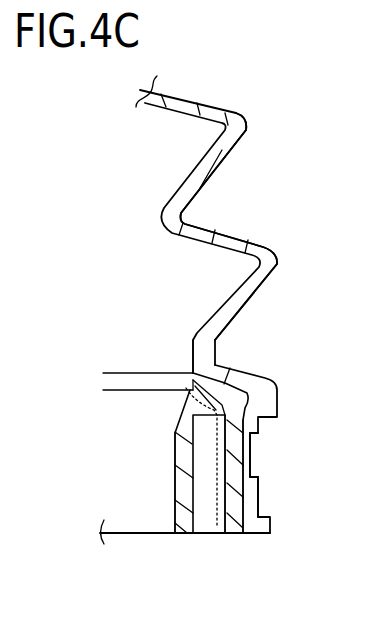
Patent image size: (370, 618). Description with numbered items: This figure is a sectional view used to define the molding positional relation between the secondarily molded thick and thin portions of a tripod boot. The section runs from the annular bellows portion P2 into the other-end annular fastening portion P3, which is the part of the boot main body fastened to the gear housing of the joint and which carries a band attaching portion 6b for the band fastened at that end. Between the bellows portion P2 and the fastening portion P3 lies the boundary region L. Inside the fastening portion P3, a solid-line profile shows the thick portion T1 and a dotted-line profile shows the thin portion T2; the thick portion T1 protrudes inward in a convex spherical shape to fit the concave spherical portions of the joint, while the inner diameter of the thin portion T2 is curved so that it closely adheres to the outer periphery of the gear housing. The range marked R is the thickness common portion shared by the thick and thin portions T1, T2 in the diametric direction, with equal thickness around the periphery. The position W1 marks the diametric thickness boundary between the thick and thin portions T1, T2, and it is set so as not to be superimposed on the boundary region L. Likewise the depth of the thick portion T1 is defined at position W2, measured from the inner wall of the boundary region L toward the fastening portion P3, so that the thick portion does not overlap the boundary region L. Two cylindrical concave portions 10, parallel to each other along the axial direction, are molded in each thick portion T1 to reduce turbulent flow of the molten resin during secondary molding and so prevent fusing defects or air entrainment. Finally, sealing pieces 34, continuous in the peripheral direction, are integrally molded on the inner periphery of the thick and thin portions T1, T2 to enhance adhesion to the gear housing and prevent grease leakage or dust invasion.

The boundary region L is at (216, 346).
The annular bellows portion P2 is at (258, 202).
The other-end annular fastening portion P3 is at (283, 398).
The band attaching portion 6b is at (261, 477).
The sealing piece 34 is at (176, 434).
The cylindrical concave portion 10 is at (233, 502).
The position defining the depth of the thick portion W2 is at (191, 371).
The boundary between thick and thin portions W1 is at (187, 392).
The thickness common portion R is at (105, 338).
The thick portion T1 is at (177, 513).
The thin portion T2 is at (217, 527).